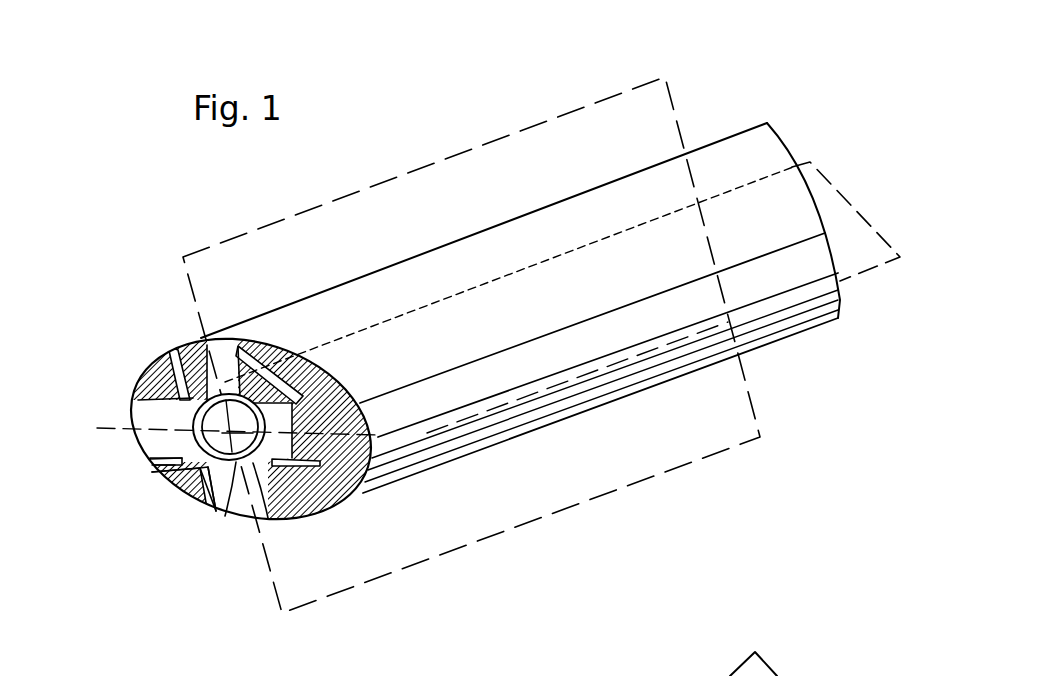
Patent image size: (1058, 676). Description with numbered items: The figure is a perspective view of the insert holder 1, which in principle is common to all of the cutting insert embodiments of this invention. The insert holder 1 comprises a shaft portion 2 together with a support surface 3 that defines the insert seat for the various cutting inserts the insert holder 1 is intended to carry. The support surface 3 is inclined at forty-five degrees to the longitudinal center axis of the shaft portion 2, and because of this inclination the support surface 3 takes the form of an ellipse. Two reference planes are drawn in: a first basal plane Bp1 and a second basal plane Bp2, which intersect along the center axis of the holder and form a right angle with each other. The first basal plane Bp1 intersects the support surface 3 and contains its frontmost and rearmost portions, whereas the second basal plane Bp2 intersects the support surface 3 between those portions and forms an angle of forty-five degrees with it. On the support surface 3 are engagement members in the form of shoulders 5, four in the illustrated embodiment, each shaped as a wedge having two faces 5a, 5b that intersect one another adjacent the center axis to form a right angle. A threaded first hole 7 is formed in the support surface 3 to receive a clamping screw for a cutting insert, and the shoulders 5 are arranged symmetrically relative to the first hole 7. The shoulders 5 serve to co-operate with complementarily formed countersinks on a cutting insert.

The insert holder 1 is at (478, 306).
The shaft portion 2 is at (540, 235).
The support surface 3 is at (362, 495).
The shoulders 5 is at (187, 507).
The face 5a is at (213, 517).
The face 5b is at (171, 466).
The threaded first hole 7 is at (250, 497).
The first basal plane Bp1 is at (837, 218).
The second basal plane Bp2 is at (652, 123).